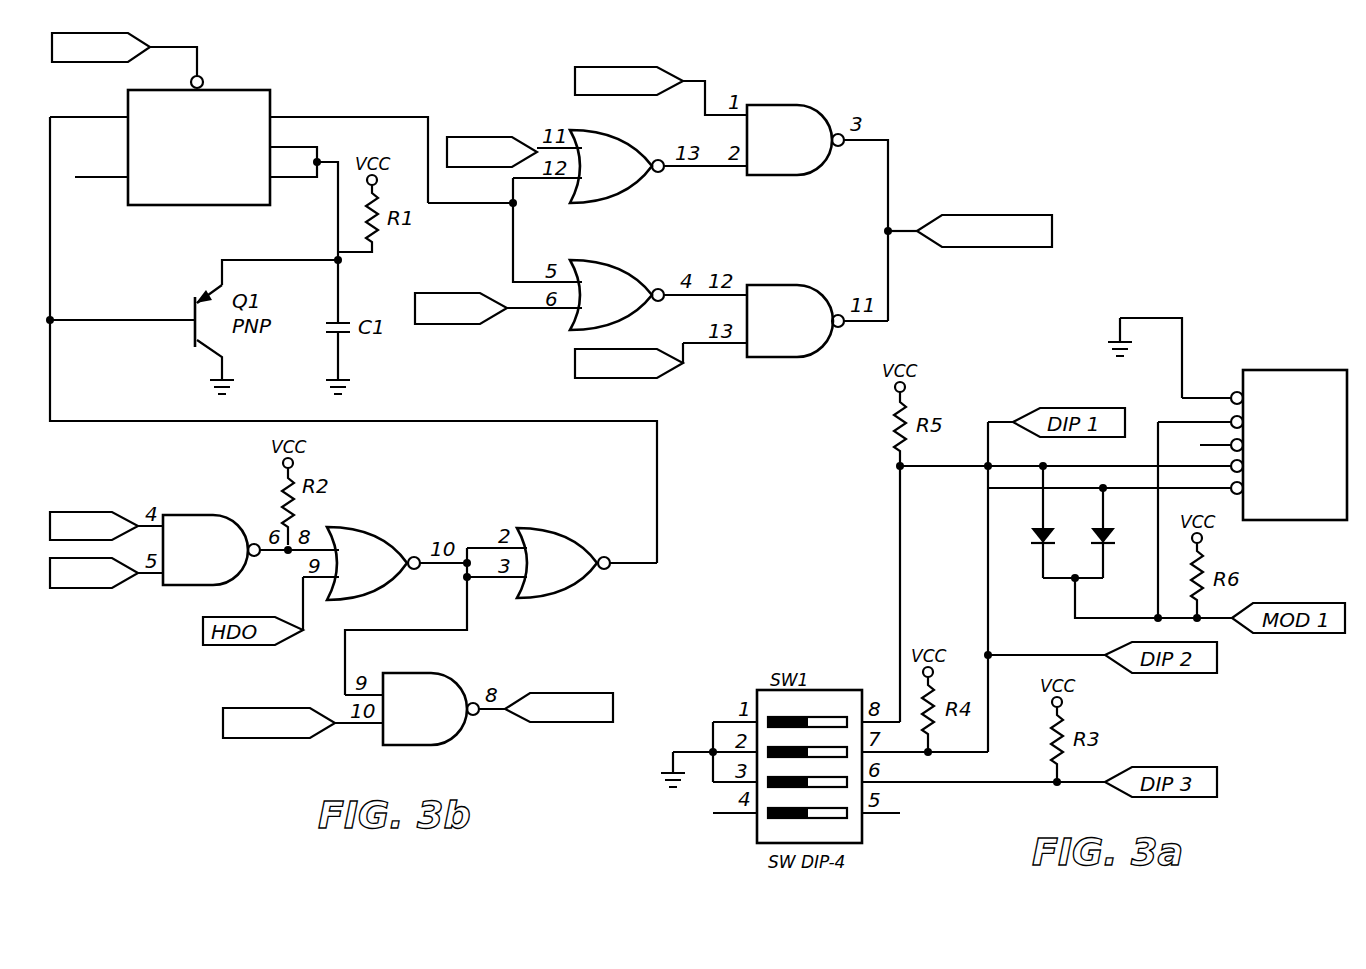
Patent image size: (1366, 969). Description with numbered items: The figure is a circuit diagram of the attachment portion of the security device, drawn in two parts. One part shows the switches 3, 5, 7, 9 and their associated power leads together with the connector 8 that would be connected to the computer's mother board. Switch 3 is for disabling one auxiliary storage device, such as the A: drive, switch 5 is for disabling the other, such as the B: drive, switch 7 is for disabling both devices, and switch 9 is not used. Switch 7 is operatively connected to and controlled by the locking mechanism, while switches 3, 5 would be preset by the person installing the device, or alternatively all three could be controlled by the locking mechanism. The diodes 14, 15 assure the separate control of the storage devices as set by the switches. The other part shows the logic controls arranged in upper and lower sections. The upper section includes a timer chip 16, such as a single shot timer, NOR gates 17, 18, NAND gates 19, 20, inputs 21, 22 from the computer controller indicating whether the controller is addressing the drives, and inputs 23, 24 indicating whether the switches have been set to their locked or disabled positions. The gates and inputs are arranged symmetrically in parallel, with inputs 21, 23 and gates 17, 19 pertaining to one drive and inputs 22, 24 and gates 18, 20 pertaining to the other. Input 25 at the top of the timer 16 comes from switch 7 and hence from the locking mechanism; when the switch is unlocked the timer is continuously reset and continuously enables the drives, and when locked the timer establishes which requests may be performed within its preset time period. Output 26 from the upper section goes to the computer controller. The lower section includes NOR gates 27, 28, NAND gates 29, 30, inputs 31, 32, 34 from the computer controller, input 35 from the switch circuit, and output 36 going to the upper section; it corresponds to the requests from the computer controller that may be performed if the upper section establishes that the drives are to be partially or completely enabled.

In FIG. 3B, the timer chip 16 is at (258, 90).
In FIG. 3B, the NOR gate 17 is at (617, 153).
In FIG. 3B, the NOR gate 18 is at (617, 281).
In FIG. 3B, the NAND gate 19 is at (795, 127).
In FIG. 3B, the NAND gate 20 is at (795, 307).
In FIG. 3B, the input from the computer controller 21 is at (490, 137).
In FIG. 3B, the input from the computer controller 22 is at (495, 324).
In FIG. 3B, the input from the switches 23 is at (628, 67).
In FIG. 3B, the input from the switches 24 is at (645, 378).
In FIG. 3B, the input to the timer 25 is at (207, 80).
In FIG. 3B, the output from the upper logic section 26 is at (1008, 215).
In FIG. 3B, the NOR gate 27 is at (373, 550).
In FIG. 3B, the NOR gate 28 is at (563, 549).
In FIG. 3B, the NAND gate 29 is at (211, 536).
In FIG. 3B, the NAND gate 30 is at (431, 695).
In FIG. 3B, the input from the computer controller 31 is at (95, 512).
In FIG. 3B, the input from the computer controller 32 is at (100, 588).
In FIG. 3B, the input from the computer controller 34 is at (575, 722).
In FIG. 3B, the input from the switch circuit 35 is at (270, 708).
In FIG. 3B, the output to the upper control section 36 is at (636, 566).
In FIG. 3A, the switch 3 is at (774, 714).
In FIG. 3A, the switch 5 is at (821, 747).
In FIG. 3A, the switch 7 is at (775, 790).
In FIG. 3A, the switch 9 is at (781, 820).
In FIG. 3A, the connector 8 is at (1310, 370).
In FIG. 3A, the diode 14 is at (1032, 545).
In FIG. 3A, the diode 15 is at (1110, 545).